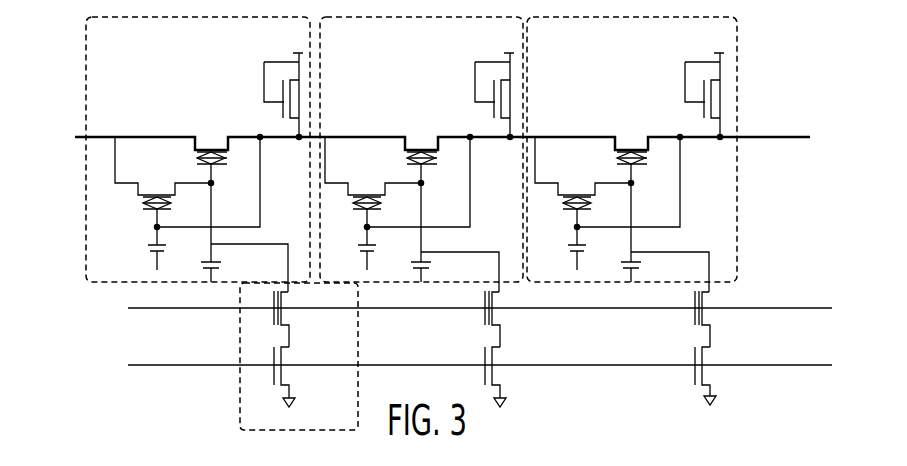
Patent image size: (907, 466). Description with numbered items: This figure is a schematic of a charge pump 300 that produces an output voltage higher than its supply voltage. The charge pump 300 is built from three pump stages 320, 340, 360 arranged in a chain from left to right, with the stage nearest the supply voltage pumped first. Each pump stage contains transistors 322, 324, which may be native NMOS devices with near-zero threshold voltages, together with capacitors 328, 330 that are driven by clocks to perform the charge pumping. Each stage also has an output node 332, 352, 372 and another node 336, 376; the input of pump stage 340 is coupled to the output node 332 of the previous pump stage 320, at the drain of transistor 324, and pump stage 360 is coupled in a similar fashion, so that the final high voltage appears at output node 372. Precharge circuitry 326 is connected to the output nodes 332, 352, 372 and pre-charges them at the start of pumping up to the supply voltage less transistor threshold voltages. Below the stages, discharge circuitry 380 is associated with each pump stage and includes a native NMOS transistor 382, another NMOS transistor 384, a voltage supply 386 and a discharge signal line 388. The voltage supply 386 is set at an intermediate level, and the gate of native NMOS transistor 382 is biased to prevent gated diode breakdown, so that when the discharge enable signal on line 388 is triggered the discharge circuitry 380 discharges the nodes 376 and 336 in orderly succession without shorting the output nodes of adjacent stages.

The charge pump 300 is at (836, 227).
The pump stage 320 is at (192, 45).
The pump stage 340 is at (437, 45).
The pump stage 360 is at (647, 45).
The transistor 322 is at (162, 193).
The transistor 324 is at (210, 148).
The precharge circuitry 326 is at (248, 70).
The capacitor 328 is at (150, 250).
The capacitor 330 is at (206, 267).
The output node 332 is at (272, 124).
The node 336 is at (312, 199).
The output node 352 is at (482, 124).
The output node 372 is at (692, 124).
The node 376 is at (627, 199).
The discharge circuitry 380 is at (282, 421).
The native NMOS transistor 382 is at (290, 312).
The NMOS transistor 384 is at (290, 370).
The voltage supply 386 is at (480, 334).
The discharge signal line 388 is at (467, 392).